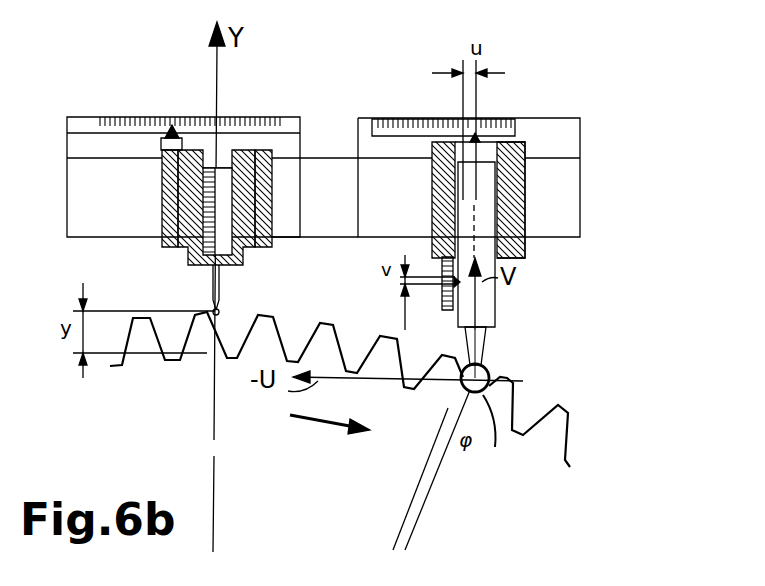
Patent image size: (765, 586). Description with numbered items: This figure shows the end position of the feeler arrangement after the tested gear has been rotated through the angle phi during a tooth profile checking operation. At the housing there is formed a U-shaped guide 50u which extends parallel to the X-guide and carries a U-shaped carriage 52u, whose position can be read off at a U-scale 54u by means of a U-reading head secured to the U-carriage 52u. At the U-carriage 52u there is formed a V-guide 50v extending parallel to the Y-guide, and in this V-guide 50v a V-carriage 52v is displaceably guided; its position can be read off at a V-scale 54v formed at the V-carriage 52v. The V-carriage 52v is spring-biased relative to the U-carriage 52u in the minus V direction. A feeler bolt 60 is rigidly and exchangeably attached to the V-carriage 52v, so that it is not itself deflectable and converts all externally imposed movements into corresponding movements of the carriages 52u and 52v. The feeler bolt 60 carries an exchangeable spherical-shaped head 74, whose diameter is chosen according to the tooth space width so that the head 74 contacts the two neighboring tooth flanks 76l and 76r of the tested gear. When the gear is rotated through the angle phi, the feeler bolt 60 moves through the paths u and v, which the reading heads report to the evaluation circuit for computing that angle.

The U-shaped guide 50u is at (565, 188).
The U-shaped carriage 52u is at (517, 218).
The U-scale 54u is at (447, 120).
The V-guide 50v is at (527, 148).
The V-carriage 52v is at (494, 300).
The V-scale 54v is at (442, 300).
The feeler bolt 60 is at (482, 338).
The spherical-shaped head 74 is at (488, 370).
The right tooth flank 76r is at (456, 392).
The left tooth flank 76l is at (407, 443).